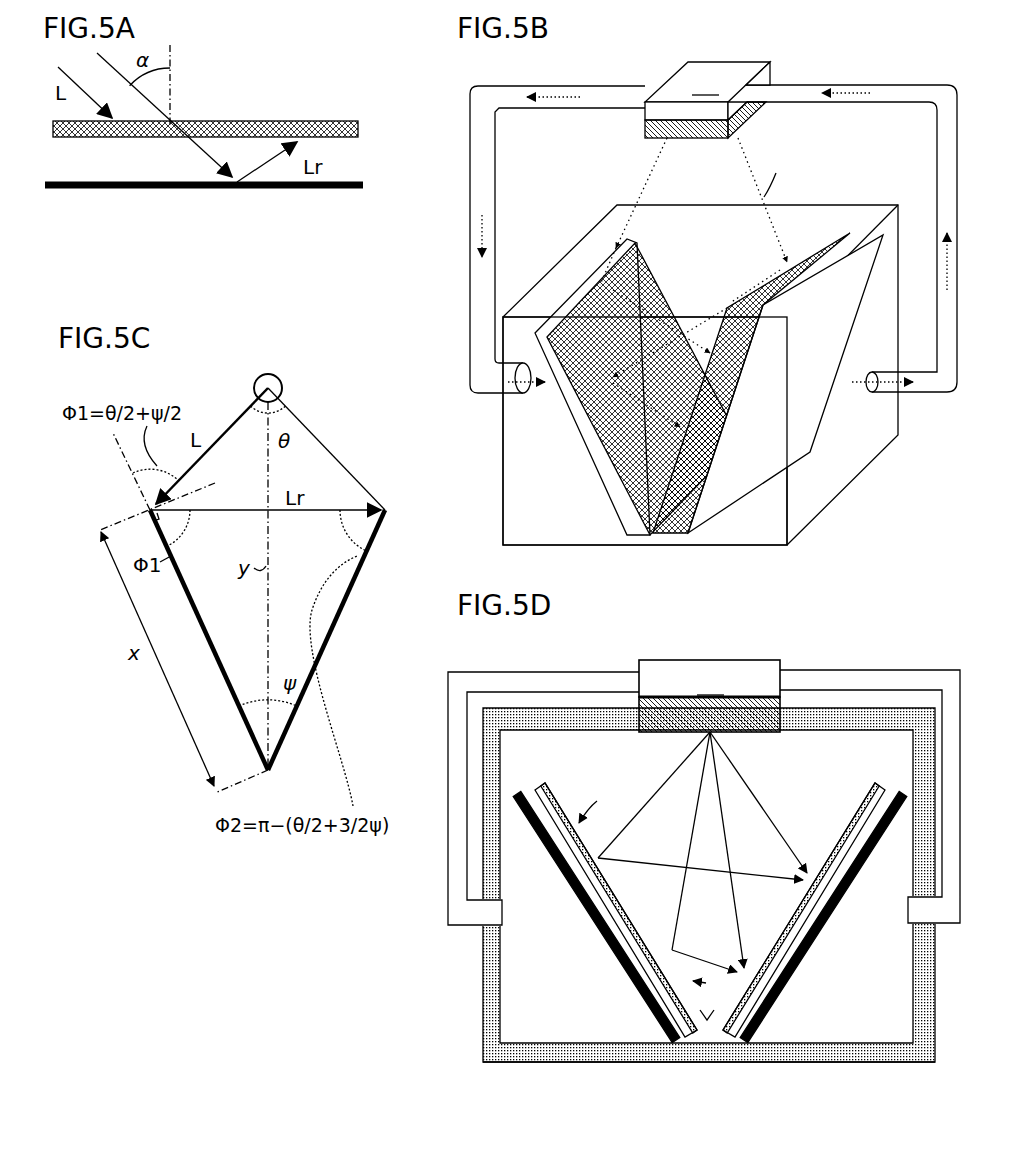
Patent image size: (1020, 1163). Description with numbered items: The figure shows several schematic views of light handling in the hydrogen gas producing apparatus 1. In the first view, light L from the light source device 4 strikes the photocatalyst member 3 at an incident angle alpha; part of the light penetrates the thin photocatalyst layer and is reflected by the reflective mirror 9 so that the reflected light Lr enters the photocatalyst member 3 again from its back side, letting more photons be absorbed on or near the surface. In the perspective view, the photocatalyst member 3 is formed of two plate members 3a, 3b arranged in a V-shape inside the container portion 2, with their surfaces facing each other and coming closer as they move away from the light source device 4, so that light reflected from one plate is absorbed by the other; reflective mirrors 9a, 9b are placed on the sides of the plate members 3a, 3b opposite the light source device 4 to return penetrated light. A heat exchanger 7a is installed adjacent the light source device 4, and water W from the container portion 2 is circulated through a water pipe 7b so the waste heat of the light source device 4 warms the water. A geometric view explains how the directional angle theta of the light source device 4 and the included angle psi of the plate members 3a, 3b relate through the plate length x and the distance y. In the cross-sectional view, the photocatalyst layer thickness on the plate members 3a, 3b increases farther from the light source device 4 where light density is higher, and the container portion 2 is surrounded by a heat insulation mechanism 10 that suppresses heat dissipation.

In FIG. 5B, the hydrogen gas producing apparatus 1 is at (635, 50).
In FIG. 5D, the hydrogen gas producing apparatus 1 is at (490, 655).
In FIG. 5B, the container portion 2 is at (856, 204).
In FIG. 5D, the container portion 2 is at (866, 1063).
In FIG. 5A, the photocatalyst member 3 is at (340, 121).
In FIG. 5B, the plate member 3a is at (640, 250).
In FIG. 5C, the plate member 3a is at (197, 622).
In FIG. 5D, the plate member 3a is at (568, 812).
In FIG. 5B, the plate member 3b is at (813, 256).
In FIG. 5C, the plate member 3b is at (345, 610).
In FIG. 5D, the plate member 3b is at (850, 830).
In FIG. 5B, the light source device 4 is at (748, 126).
In FIG. 5C, the light source device 4 is at (280, 375).
In FIG. 5D, the light source device 4 is at (766, 733).
In FIG. 5B, the heat exchanger 7a is at (707, 91).
In FIG. 5D, the heat exchanger 7a is at (709, 678).
In FIG. 5B, the water pipe 7b is at (566, 86).
In FIG. 5D, the water pipe 7b is at (587, 672).
In FIG. 5A, the reflective mirror 9 is at (305, 189).
In FIG. 5B, the reflective mirror 9a is at (576, 407).
In FIG. 5D, the reflective mirror 9a is at (612, 958).
In FIG. 5B, the reflective mirror 9b is at (832, 391).
In FIG. 5D, the reflective mirror 9b is at (857, 888).
In FIG. 5D, the heat insulation mechanism 10 is at (535, 1063).